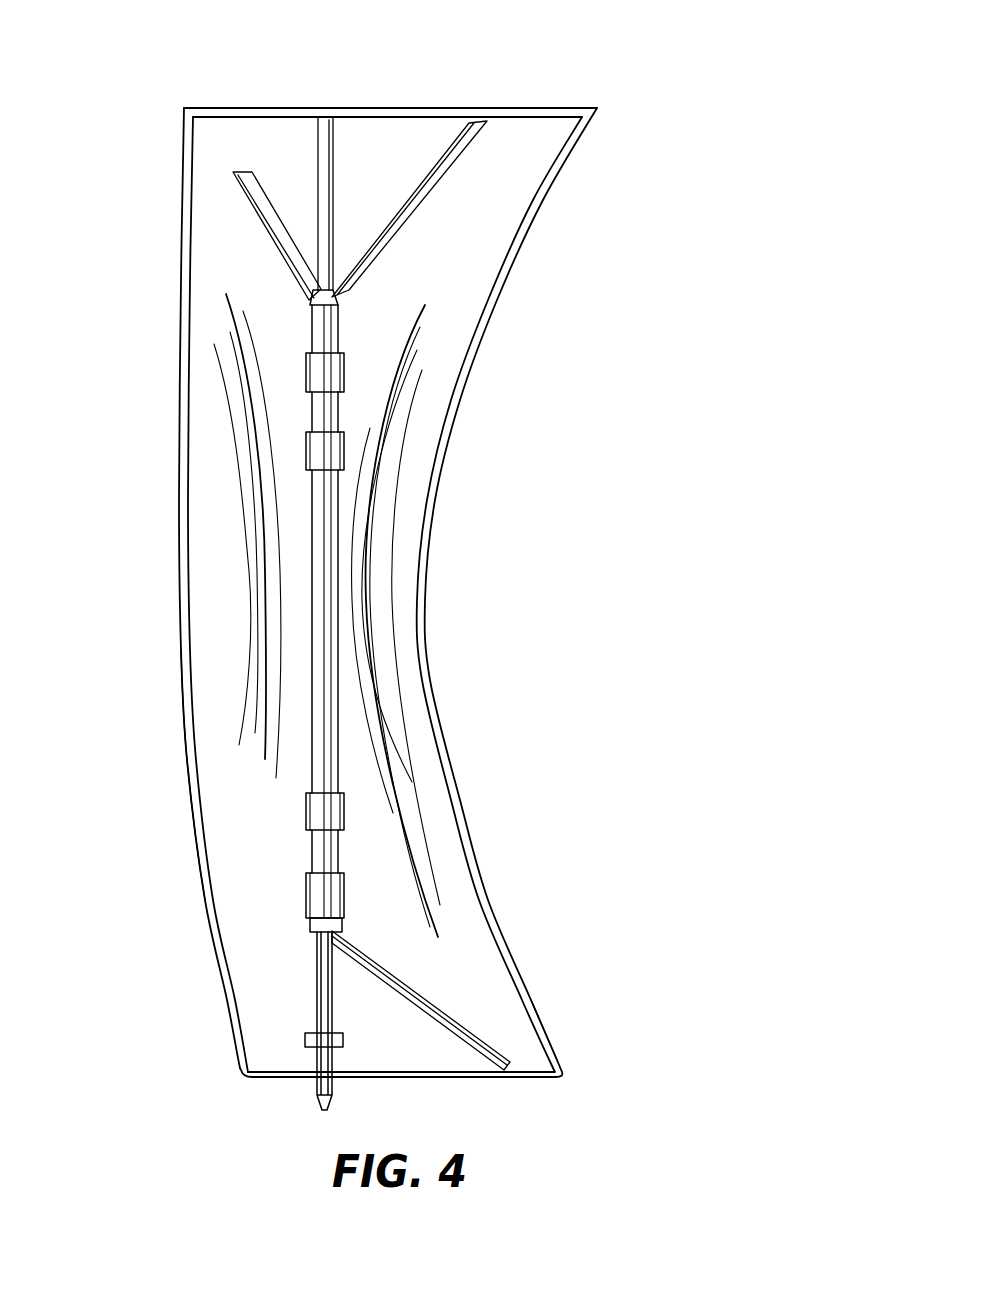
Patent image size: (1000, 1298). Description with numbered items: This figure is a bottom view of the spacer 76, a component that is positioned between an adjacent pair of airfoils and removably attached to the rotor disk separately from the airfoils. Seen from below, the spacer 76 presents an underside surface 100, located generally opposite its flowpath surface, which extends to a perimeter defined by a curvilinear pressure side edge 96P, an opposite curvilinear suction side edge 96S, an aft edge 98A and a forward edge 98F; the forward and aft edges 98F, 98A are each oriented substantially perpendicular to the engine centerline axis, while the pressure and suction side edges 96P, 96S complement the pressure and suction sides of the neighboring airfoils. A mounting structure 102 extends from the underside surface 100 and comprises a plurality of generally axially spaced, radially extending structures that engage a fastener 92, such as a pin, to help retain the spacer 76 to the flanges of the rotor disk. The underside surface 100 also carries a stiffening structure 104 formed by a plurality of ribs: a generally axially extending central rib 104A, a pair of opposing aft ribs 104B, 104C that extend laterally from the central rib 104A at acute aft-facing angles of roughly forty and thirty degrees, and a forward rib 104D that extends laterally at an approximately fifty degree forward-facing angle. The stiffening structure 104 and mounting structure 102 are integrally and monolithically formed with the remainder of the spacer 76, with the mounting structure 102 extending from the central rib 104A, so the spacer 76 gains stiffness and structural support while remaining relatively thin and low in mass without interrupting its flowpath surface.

The spacer 76 is at (545, 90).
The fastener 92 is at (322, 652).
The pressure side edge 96P is at (185, 750).
The suction side edge 96S is at (565, 1046).
The aft edge 98A is at (213, 107).
The forward edge 98F is at (267, 1078).
The underside surface 100 is at (262, 283).
The mounting structure 102 is at (330, 370).
The stiffening structure 104 is at (360, 565).
The central rib 104A is at (333, 160).
The aft rib 104B is at (397, 242).
The aft rib 104C is at (242, 185).
The forward rib 104D is at (478, 1035).